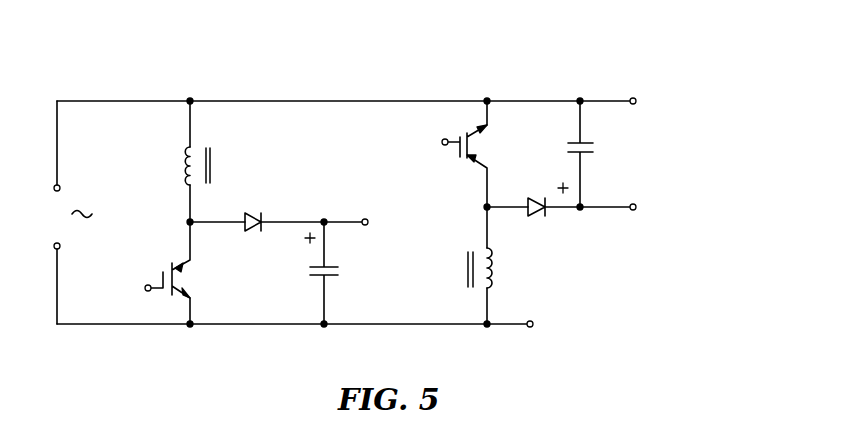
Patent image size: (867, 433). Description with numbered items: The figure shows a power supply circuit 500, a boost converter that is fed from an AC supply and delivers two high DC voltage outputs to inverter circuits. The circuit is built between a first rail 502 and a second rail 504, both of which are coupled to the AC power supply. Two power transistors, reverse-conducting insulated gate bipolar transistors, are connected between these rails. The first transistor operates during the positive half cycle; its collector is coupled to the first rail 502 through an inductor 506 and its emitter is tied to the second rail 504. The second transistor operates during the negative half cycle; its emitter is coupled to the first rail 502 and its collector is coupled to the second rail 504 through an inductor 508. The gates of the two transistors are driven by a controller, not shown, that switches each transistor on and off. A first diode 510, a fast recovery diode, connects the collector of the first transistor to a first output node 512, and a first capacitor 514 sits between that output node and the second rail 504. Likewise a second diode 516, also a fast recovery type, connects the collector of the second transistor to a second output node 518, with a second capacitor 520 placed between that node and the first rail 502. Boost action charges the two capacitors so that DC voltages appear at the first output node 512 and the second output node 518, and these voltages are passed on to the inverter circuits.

The power supply circuit 500 is at (544, 46).
The first rail 502 is at (117, 101).
The second rail 504 is at (125, 324).
The inductor 506 is at (193, 147).
The inductor 508 is at (482, 248).
The first diode 510 is at (248, 210).
The first output node 512 is at (368, 227).
The first capacitor 514 is at (317, 280).
The second diode 516 is at (538, 213).
The second output node 518 is at (637, 212).
The second capacitor 520 is at (573, 146).